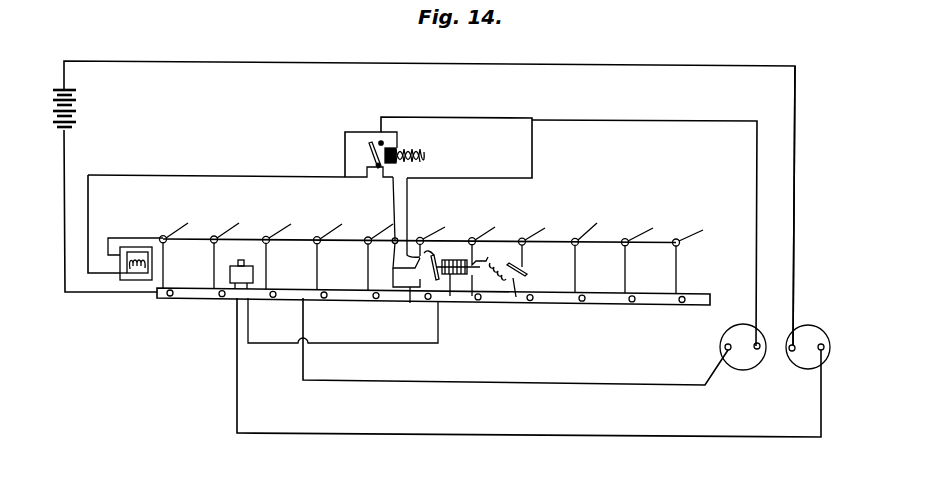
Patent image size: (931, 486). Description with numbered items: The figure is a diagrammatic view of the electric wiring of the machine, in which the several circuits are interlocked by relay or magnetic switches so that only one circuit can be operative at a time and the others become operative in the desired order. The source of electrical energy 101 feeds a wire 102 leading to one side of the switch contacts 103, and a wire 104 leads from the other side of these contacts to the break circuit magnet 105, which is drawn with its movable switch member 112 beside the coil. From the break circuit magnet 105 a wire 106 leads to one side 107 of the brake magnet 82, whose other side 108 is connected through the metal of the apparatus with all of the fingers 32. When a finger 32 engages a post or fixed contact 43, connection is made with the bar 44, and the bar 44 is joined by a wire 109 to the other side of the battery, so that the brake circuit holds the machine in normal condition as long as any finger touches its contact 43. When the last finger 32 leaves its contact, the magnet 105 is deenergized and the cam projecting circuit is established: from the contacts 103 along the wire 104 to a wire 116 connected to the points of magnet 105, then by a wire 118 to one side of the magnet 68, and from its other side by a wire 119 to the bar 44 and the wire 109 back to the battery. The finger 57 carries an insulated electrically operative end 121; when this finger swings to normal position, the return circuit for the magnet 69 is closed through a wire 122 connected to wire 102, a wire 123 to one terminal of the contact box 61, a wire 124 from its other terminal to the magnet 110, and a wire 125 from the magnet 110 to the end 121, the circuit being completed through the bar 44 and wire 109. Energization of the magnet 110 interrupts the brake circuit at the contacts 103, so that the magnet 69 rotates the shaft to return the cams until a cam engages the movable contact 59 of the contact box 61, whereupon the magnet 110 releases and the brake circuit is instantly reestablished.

The source of electrical energy 101 is at (72, 110).
The wire 102 is at (533, 157).
The switch contacts 103 is at (393, 288).
The wire 104 is at (392, 208).
The break circuit magnet 105 is at (425, 152).
The wire 106 is at (240, 175).
The side of magnet 107 is at (120, 279).
The side of magnet 108 is at (120, 257).
The wire 109 is at (145, 282).
The magnet 110 is at (450, 303).
The relay armature 112 is at (371, 144).
The wire 116 is at (373, 180).
The wire 118 is at (693, 121).
The wire 119 is at (606, 385).
The electrically operative end 121 is at (531, 302).
The wire 122 is at (796, 94).
The wire 123 is at (821, 404).
The wire 124 is at (275, 343).
The wire 125 is at (490, 257).
The finger 32 is at (214, 257).
The contact 43 is at (222, 298).
The bar 44 is at (190, 299).
The finger 57 is at (545, 228).
The movable contact 59 is at (245, 258).
The contact box 61 is at (238, 258).
The magnet 68 is at (742, 365).
The magnet 69 is at (795, 362).
The brake magnet 82 is at (142, 250).